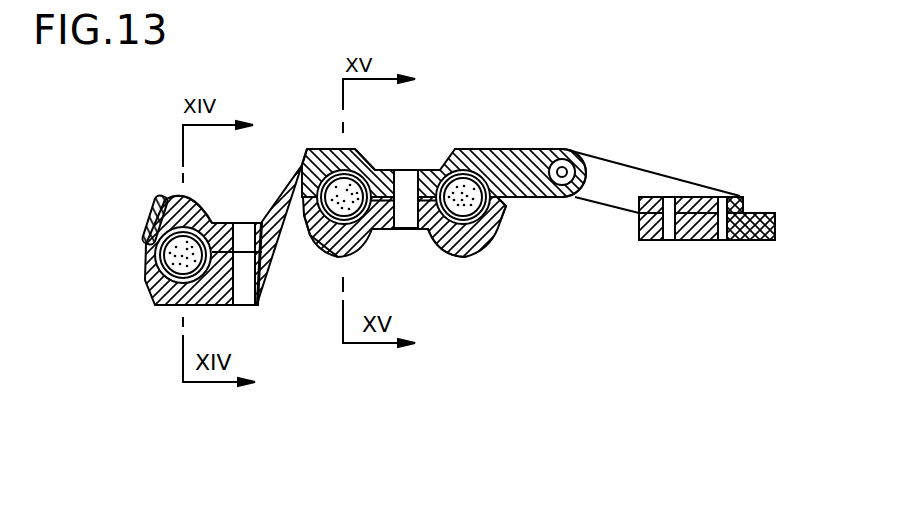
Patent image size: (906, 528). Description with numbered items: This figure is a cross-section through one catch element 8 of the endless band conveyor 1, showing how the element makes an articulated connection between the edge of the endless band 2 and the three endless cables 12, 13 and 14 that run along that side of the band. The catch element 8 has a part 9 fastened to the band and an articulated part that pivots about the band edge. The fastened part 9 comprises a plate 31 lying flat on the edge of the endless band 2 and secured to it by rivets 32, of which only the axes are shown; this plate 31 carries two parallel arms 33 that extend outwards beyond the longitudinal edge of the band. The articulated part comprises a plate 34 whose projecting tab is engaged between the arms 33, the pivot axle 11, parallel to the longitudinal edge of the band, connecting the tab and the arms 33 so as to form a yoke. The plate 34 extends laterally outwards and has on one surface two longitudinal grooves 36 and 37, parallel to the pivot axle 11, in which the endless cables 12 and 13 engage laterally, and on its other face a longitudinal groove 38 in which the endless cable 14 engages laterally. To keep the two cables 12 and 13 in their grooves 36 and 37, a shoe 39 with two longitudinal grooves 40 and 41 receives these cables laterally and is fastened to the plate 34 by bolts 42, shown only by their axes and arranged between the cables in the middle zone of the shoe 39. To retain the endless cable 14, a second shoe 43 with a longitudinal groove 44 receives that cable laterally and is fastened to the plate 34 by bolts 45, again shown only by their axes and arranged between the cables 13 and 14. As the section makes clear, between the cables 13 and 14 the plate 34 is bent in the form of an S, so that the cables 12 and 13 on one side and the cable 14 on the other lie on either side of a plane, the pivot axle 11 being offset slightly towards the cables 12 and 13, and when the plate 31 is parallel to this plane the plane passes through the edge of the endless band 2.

The endless band conveyor 1 is at (430, 167).
The endless band 2 is at (760, 238).
The catch element 8 is at (560, 145).
The part fastened to the band 9 is at (673, 178).
The pivot axle 11 is at (572, 168).
The endless cable 12 is at (470, 175).
The endless cable 13 is at (412, 172).
The endless cable 14 is at (153, 282).
The plate 31 is at (700, 197).
The rivets 32 is at (722, 235).
The parallel arms 33 is at (620, 177).
The plate 34 is at (296, 180).
The longitudinal groove 36 is at (500, 175).
The longitudinal groove 37 is at (360, 170).
The longitudinal groove 38 is at (150, 258).
The shoe 39 is at (433, 232).
The longitudinal groove 40 is at (500, 218).
The longitudinal groove 41 is at (313, 248).
The bolts 42 is at (408, 222).
The shoe 43 is at (198, 218).
The longitudinal groove 44 is at (170, 207).
The bolts 45 is at (245, 296).